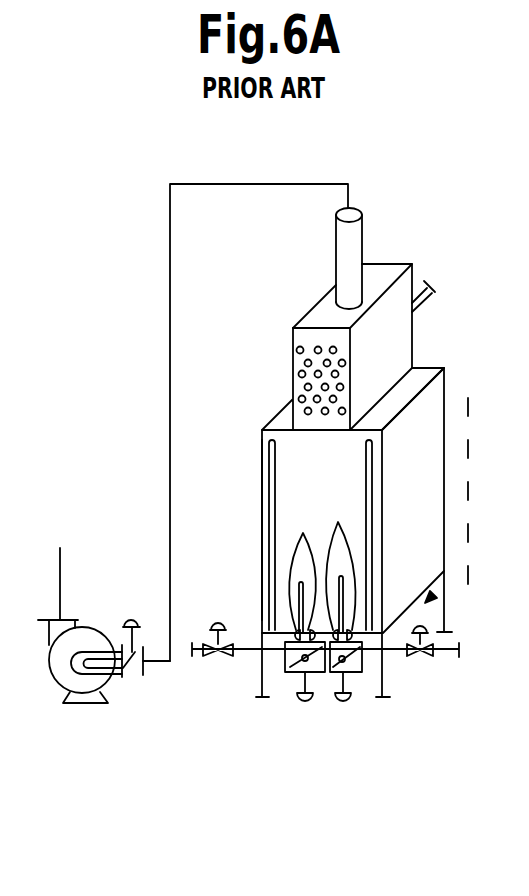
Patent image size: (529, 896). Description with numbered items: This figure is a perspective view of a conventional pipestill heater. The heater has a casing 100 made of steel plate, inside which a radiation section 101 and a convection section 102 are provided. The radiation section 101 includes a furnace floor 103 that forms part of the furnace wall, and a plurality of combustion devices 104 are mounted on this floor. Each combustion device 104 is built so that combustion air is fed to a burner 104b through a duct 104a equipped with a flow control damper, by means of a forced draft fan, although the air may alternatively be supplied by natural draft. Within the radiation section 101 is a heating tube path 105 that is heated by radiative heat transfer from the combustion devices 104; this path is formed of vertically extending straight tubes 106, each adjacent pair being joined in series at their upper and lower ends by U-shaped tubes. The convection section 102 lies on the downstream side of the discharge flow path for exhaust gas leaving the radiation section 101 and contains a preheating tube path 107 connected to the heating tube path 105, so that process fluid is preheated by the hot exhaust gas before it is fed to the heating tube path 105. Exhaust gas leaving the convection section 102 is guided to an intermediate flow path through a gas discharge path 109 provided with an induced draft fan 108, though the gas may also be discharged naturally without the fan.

The casing 100 is at (430, 478).
The radiation section 101 is at (352, 470).
The convection section 102 is at (337, 353).
The furnace floor 103 is at (375, 620).
The combustion device 104 is at (293, 622).
The duct 104a is at (290, 673).
The burner 104b is at (293, 633).
The heating tube path 105 is at (268, 488).
The straight tube 106 is at (268, 443).
The preheating tube path 107 is at (297, 350).
The induced draft fan 108 is at (56, 682).
The gas discharge path 109 is at (170, 315).